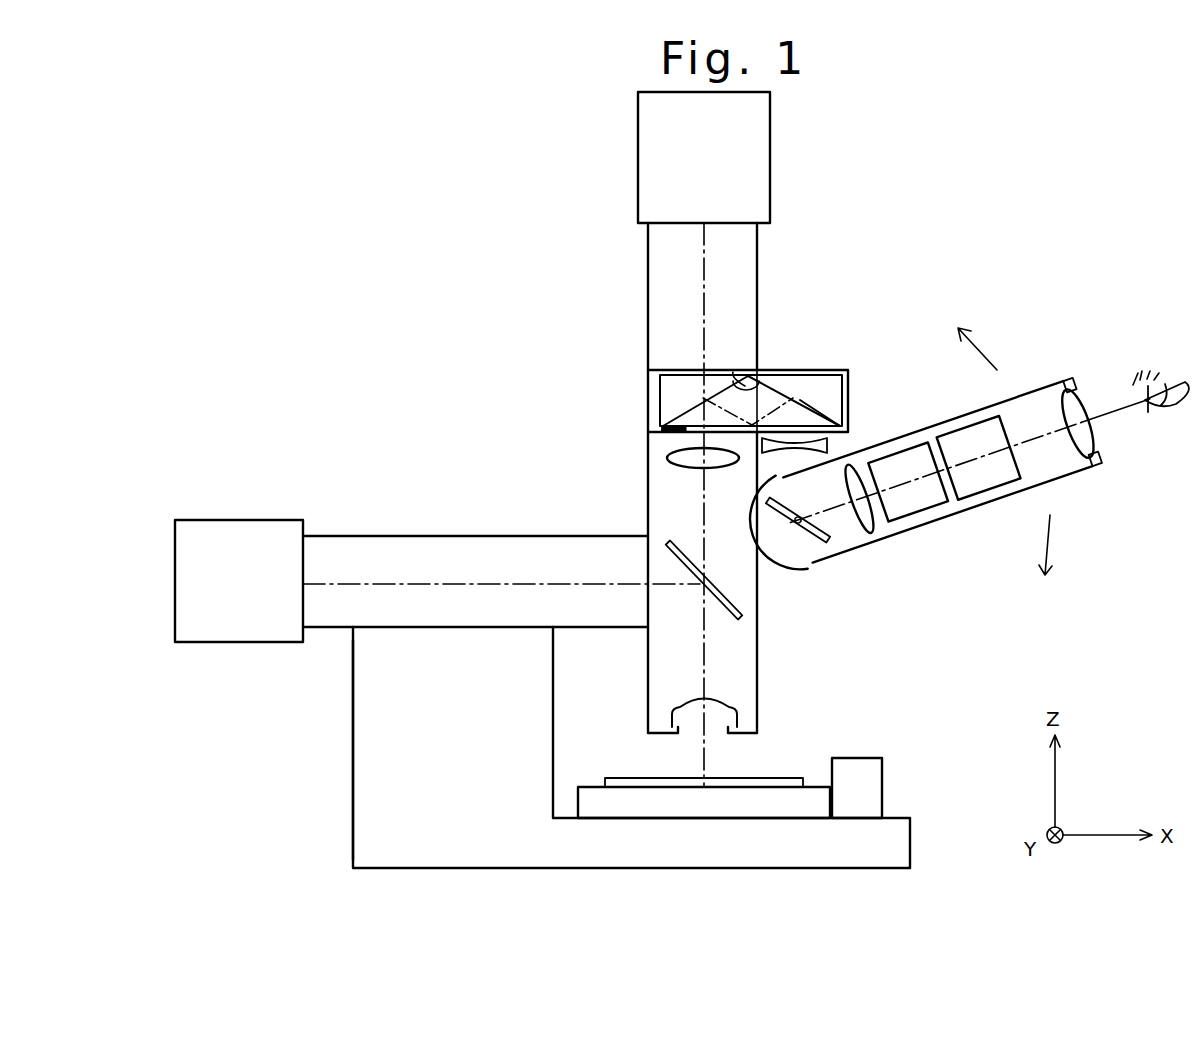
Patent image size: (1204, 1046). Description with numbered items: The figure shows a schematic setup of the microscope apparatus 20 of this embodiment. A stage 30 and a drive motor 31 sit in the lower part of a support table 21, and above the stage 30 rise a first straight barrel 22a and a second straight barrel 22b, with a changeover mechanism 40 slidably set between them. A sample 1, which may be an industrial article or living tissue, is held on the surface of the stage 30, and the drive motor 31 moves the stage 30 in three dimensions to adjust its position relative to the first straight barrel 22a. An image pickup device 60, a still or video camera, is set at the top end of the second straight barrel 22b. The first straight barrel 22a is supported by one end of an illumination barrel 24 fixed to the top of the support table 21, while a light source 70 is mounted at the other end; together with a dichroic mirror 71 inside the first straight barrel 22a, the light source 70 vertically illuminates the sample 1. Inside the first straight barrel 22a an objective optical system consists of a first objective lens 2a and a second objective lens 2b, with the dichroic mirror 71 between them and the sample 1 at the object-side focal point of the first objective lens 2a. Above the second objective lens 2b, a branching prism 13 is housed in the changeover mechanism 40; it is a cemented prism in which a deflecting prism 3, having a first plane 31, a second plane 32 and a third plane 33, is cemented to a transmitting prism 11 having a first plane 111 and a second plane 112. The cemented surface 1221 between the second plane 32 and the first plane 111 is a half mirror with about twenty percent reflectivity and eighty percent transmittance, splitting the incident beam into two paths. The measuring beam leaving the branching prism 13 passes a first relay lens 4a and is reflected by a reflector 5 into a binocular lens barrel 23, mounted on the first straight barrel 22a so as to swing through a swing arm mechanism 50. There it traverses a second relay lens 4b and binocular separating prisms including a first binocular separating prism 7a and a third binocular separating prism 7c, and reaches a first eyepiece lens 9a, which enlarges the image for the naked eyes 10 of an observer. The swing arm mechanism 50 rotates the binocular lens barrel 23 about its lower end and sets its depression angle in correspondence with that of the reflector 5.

The sample 1 is at (790, 776).
The first objective lens 2a is at (737, 712).
The second objective lens 2b is at (668, 458).
The deflecting prism 3 is at (672, 412).
The first plane 31 is at (662, 433).
The second plane 32 is at (748, 386).
The third plane 33 is at (832, 414).
The first relay lens 4a is at (838, 442).
The second relay lens 4b is at (889, 522).
The reflector 5 is at (823, 544).
The first binocular separating prism 7a is at (922, 508).
The third binocular separating prism 7c is at (988, 484).
The first eyepiece lens 9a is at (1102, 451).
The naked eyes 10 is at (1176, 402).
The transmitting prism 11 is at (664, 379).
The first plane 111 is at (744, 362).
The second plane 112 is at (678, 373).
The cemented surface 1221 is at (817, 268).
The branching prism 13 is at (600, 362).
The microscope apparatus 20 is at (330, 822).
The support table 21 is at (351, 738).
The first straight barrel 22a is at (757, 660).
The second straight barrel 22b is at (652, 293).
The binocular lens barrel 23 is at (961, 433).
The illumination barrel 24 is at (444, 536).
The stage 30 is at (584, 776).
The changeover mechanism 40 is at (836, 370).
The swing arm mechanism 50 is at (794, 555).
The image pickup device 60 is at (772, 157).
The light source 70 is at (237, 520).
The dichroic mirror 71 is at (742, 610).